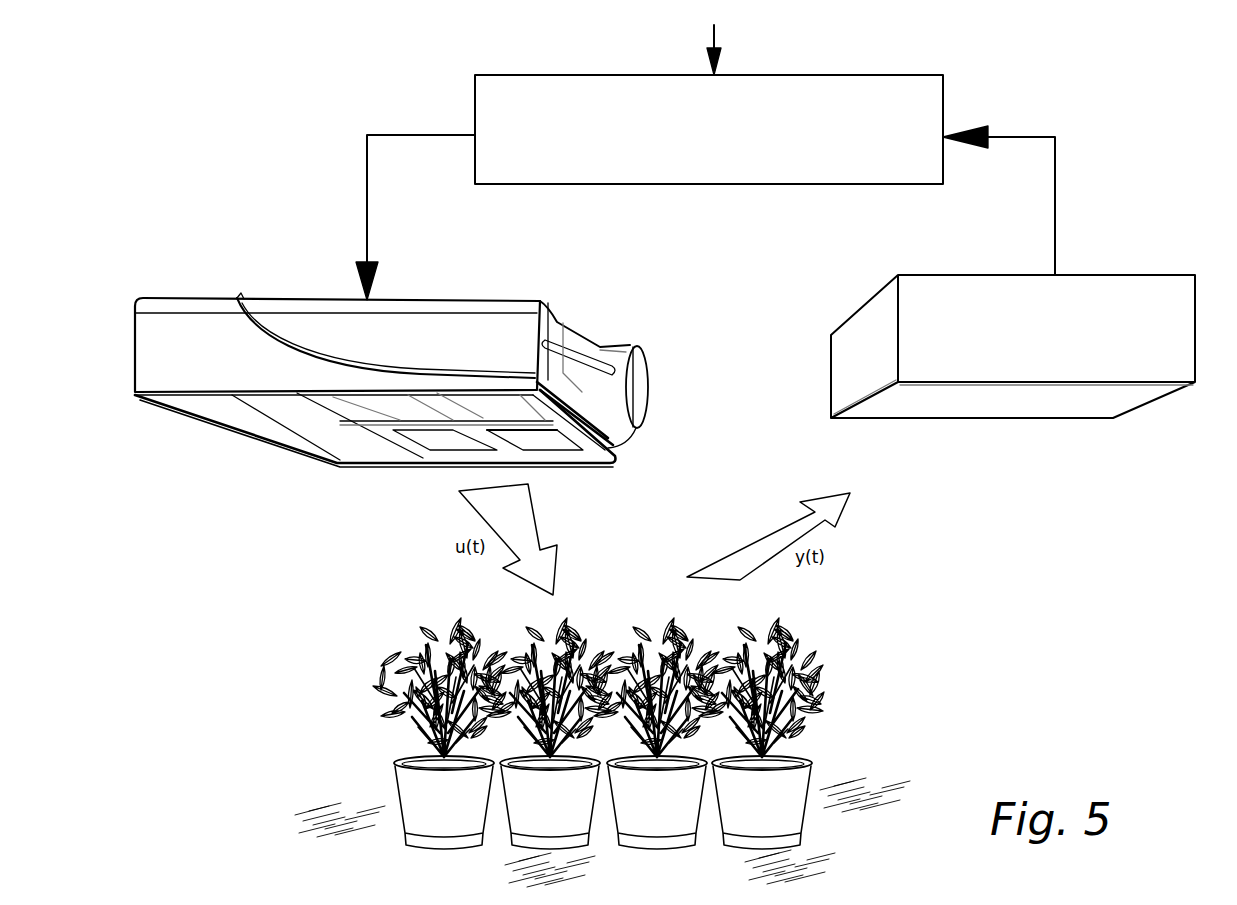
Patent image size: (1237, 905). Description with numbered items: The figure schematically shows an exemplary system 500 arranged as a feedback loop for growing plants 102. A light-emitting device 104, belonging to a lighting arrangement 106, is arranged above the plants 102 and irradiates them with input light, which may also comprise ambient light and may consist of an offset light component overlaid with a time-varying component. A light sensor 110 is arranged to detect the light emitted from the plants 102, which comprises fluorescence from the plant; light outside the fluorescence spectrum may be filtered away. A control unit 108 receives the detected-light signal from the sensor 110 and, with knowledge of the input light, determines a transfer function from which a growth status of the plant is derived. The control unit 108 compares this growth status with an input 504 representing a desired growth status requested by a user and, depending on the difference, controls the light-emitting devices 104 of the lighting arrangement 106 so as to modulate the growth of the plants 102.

The system 500 is at (222, 176).
The input 504 is at (743, 50).
The control unit 108 is at (920, 125).
The light sensor 110 is at (1058, 346).
The lighting arrangement 106 is at (185, 340).
The light-emitting device 104 is at (287, 408).
The plants 102 is at (390, 647).